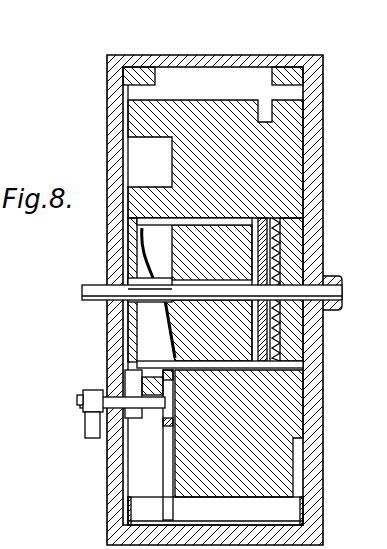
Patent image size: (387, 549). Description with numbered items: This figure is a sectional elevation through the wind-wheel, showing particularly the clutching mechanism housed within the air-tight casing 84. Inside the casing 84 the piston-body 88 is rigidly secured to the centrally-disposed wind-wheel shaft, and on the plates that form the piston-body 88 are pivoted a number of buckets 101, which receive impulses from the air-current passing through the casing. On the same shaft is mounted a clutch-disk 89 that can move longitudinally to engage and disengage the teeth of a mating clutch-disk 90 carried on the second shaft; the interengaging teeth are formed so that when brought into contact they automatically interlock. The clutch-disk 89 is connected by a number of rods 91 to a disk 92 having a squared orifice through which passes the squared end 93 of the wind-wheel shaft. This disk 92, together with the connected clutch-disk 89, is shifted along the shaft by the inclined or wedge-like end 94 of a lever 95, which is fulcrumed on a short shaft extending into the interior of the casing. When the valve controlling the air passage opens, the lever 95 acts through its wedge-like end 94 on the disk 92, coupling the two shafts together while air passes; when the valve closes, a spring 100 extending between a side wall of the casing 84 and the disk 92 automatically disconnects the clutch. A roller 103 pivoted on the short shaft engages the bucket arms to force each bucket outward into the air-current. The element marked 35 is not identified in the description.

The casing 84 is at (323, 148).
The piston-body 88 is at (272, 422).
The mating clutch-disk 90 is at (303, 240).
The clutch-disk 89 is at (250, 342).
The rods 91 is at (137, 226).
The disk 92 is at (130, 248).
The lever arm 35 is at (98, 318).
The spring 100 is at (70, 327).
The squared end of shaft 93 is at (82, 290).
The roller 103 is at (163, 424).
The inclined or wedge-like end of lever 94 is at (130, 384).
The lever 95 is at (88, 433).
The buckets 101 is at (322, 522).